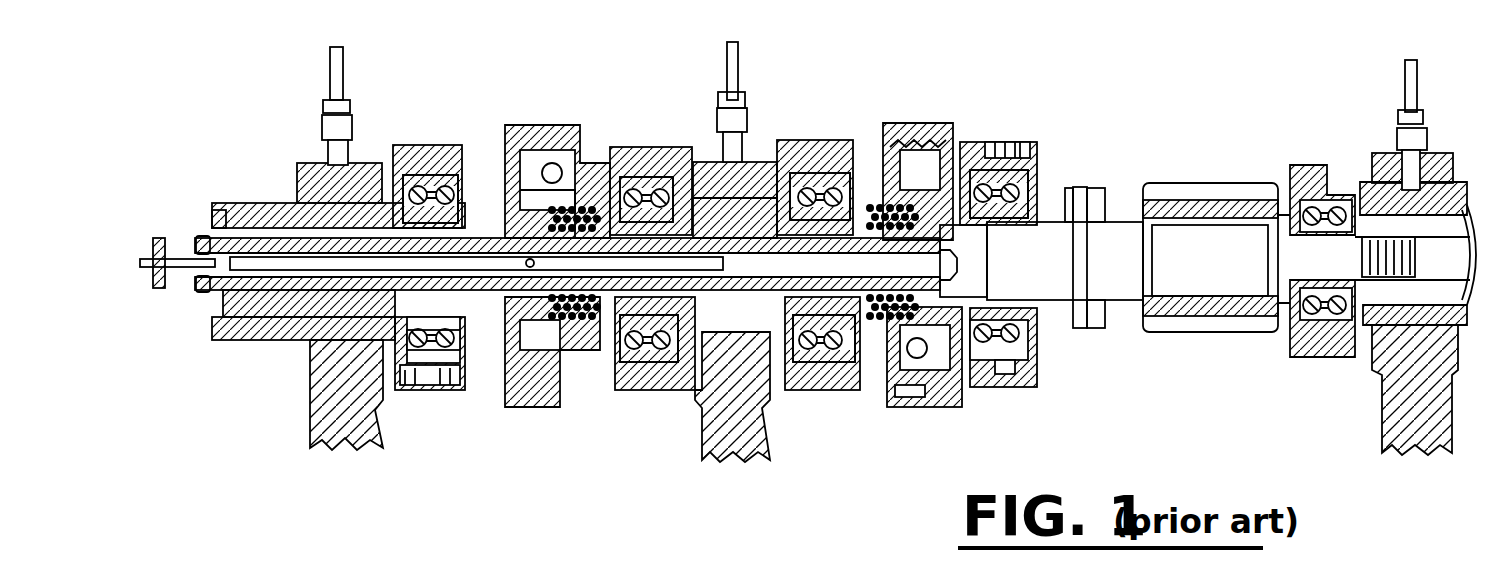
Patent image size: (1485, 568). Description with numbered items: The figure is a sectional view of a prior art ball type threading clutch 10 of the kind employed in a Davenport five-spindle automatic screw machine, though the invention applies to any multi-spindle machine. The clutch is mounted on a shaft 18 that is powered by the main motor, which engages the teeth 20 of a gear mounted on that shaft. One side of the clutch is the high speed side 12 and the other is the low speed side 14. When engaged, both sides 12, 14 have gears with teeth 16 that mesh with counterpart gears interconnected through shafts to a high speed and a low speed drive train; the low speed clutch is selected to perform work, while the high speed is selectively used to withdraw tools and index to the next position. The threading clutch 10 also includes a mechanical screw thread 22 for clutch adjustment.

The ball type threading clutch 10 is at (946, 70).
The high speed side 12 is at (1010, 142).
The low speed side 14 is at (635, 142).
The teeth 16 is at (647, 393).
The shaft 18 is at (1117, 308).
The teeth 20 is at (1213, 182).
The mechanical screw thread 22 is at (922, 410).